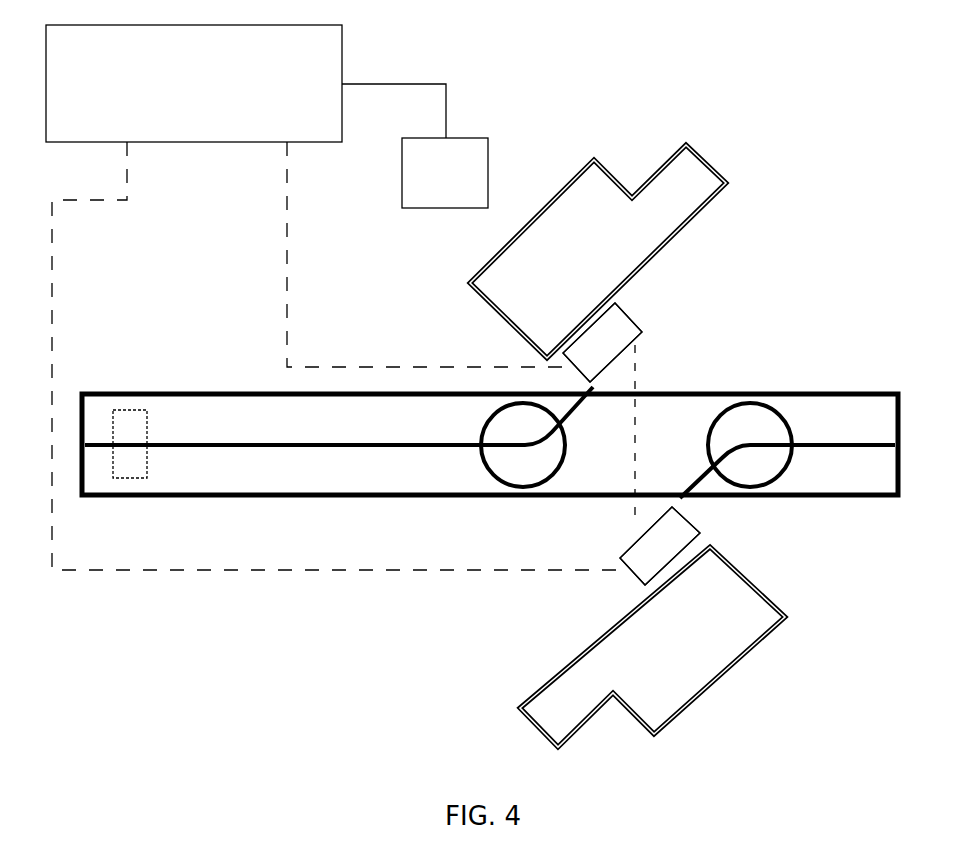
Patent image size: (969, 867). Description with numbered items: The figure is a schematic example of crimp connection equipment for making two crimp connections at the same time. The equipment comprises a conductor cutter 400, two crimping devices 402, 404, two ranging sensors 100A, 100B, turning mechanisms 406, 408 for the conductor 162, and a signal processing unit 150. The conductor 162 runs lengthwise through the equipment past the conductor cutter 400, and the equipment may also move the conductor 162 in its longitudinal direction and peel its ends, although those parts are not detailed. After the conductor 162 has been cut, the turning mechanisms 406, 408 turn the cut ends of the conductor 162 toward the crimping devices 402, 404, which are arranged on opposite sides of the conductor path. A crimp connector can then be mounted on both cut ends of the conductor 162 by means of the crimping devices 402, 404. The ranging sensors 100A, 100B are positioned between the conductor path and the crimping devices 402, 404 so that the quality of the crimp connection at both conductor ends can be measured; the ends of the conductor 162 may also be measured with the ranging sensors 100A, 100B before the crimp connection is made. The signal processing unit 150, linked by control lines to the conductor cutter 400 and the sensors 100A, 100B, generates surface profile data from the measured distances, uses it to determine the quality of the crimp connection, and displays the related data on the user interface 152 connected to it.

The signal processing unit 150 is at (160, 25).
The user interface 152 is at (402, 155).
The conductor 162 is at (312, 444).
The conductor cutter 400 is at (125, 410).
The crimping device 402 is at (562, 266).
The crimping device 404 is at (667, 656).
The turning mechanism 406 is at (787, 428).
The turning mechanism 408 is at (484, 468).
The ranging sensor 100A is at (627, 315).
The ranging sensor 100B is at (627, 315).